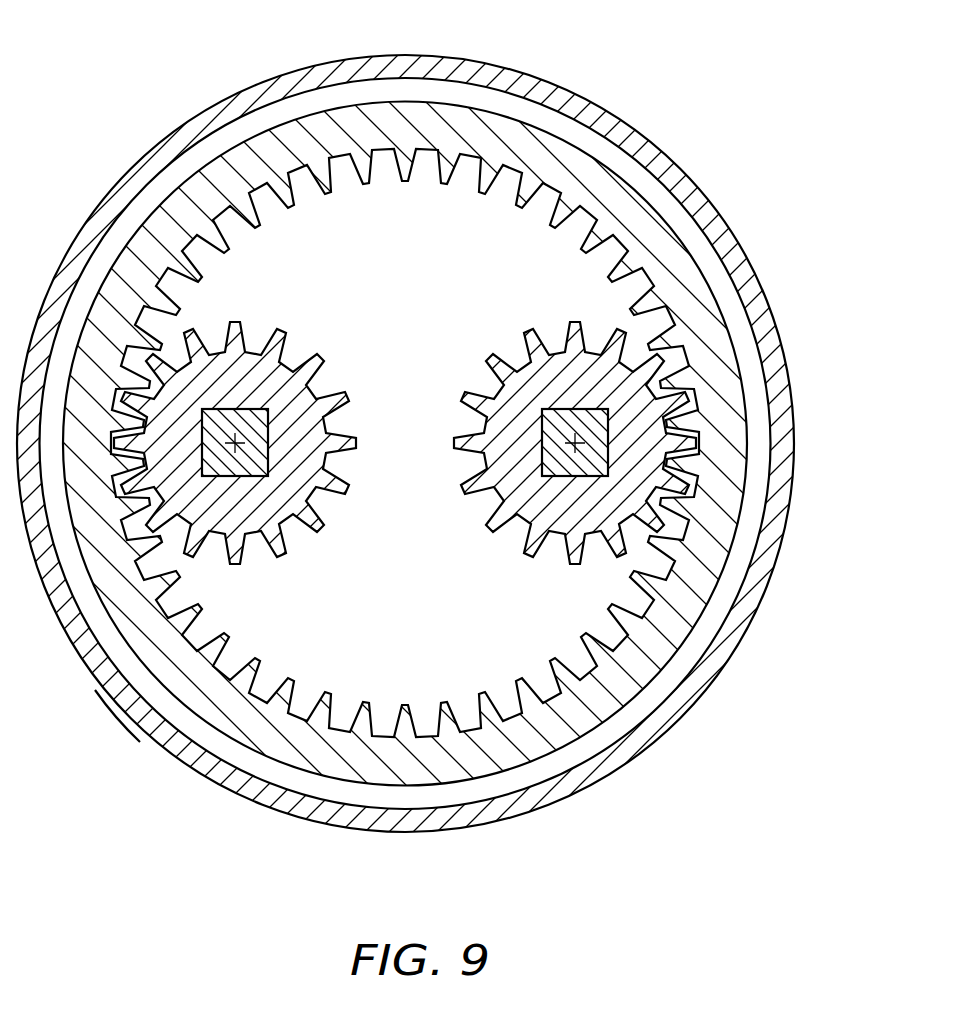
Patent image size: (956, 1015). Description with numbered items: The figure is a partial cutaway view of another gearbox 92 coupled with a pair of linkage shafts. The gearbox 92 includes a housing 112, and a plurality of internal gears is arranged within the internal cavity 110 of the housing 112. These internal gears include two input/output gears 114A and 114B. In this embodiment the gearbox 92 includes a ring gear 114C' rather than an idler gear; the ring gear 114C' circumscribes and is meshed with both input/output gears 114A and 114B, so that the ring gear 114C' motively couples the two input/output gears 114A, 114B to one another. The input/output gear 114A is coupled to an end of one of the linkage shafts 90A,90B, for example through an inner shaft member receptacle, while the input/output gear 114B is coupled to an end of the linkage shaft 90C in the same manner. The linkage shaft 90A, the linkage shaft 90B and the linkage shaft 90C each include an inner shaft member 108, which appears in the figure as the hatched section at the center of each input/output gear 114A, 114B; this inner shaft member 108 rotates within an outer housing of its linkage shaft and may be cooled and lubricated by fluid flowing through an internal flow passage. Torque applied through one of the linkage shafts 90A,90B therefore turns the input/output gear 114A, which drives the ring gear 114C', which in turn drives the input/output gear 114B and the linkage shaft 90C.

The gearbox 92 is at (152, 89).
The internal cavity 110 is at (758, 470).
The housing 112 is at (720, 222).
The input/output gear 114A is at (320, 356).
The input/output gear 114B is at (540, 332).
The ring gear 114C' is at (92, 704).
The inner shaft member 108 is at (405, 481).
The linkage shaft 90A is at (326, 409).
The linkage shaft 90B is at (276, 438).
The linkage shafts 90A,90B is at (326, 409).
The linkage shaft 90C is at (536, 463).